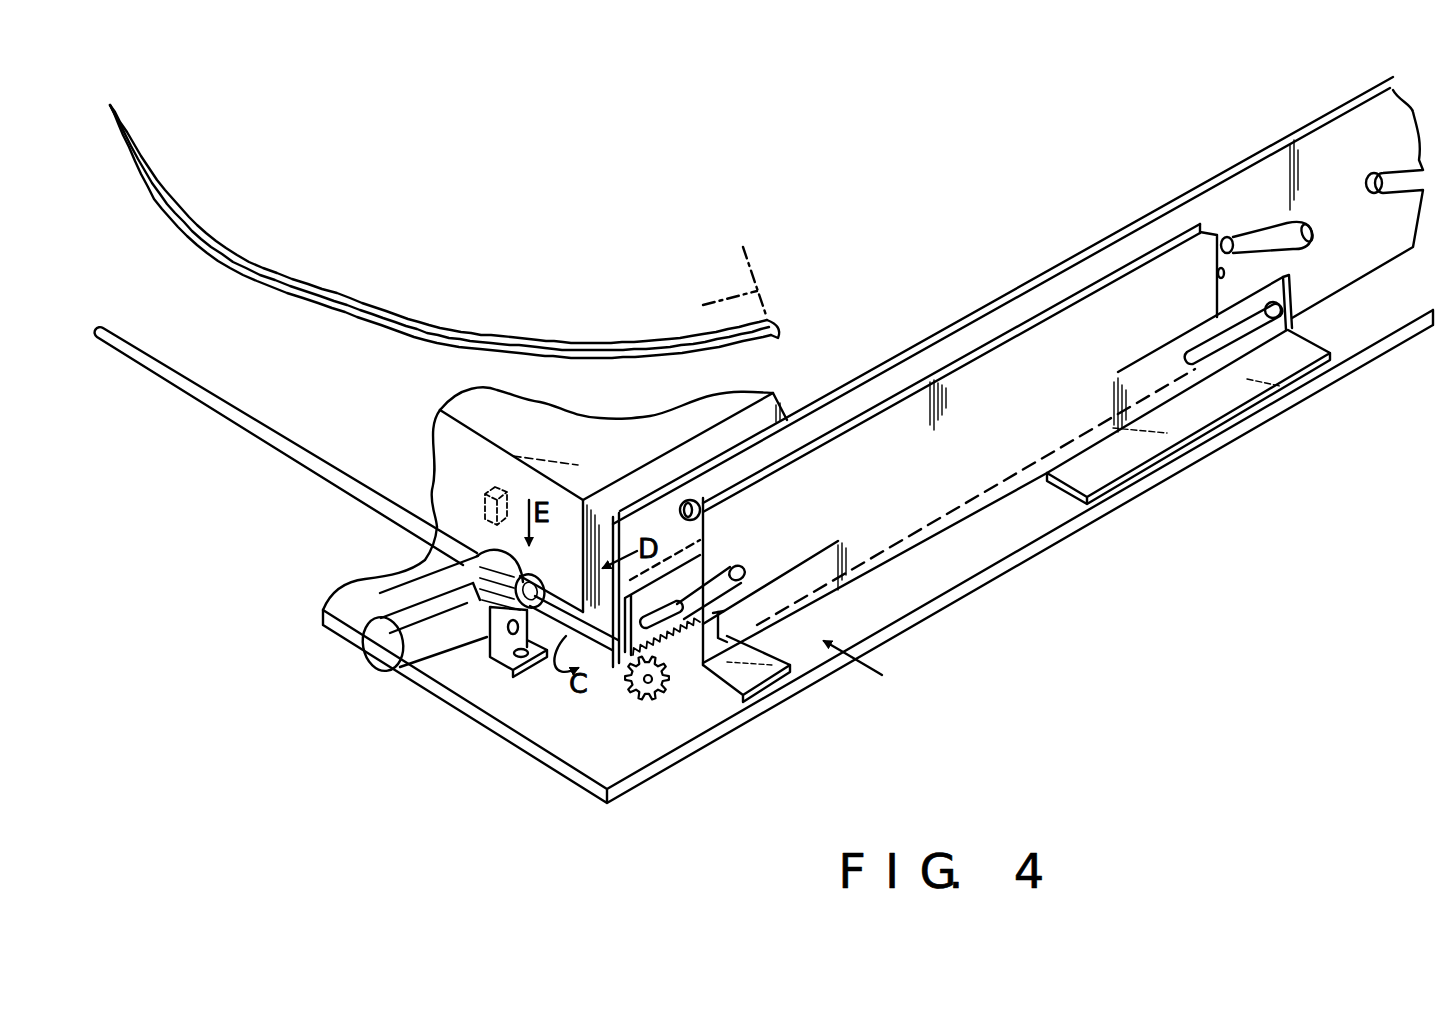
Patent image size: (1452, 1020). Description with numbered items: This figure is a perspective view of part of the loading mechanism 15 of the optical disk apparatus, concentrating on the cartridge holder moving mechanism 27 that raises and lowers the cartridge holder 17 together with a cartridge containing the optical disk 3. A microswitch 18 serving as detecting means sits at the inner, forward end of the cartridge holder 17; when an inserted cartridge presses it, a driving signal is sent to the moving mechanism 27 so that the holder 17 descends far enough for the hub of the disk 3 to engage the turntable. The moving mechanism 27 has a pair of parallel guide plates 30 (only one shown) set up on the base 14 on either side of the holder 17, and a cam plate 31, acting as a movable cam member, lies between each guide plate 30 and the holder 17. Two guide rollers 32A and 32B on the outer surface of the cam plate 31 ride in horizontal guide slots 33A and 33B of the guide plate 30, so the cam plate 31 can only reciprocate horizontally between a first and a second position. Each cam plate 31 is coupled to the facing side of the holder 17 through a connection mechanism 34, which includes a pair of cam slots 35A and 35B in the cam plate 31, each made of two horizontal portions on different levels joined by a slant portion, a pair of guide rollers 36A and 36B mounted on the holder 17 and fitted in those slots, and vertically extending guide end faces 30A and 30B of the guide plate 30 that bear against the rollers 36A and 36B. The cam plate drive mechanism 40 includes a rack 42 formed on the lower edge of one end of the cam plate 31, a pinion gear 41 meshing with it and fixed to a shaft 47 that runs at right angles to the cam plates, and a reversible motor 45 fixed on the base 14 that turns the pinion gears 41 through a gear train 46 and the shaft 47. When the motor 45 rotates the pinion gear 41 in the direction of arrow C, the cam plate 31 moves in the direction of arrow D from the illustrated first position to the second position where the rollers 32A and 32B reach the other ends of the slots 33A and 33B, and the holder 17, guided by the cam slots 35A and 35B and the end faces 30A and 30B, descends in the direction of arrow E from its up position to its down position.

The optical disk 3 is at (752, 293).
The base 14 is at (1033, 546).
The loading mechanism 15 is at (400, 447).
The cartridge holder 17 is at (443, 510).
The microswitch 18 is at (498, 482).
The cartridge holder moving mechanism 27 is at (905, 677).
The guide plate 30 is at (915, 523).
The guide end face 30A is at (705, 543).
The guide end face 30B is at (1213, 278).
The cam plate 31 is at (1025, 300).
The guide roller 32A is at (743, 585).
The guide roller 32B is at (1277, 318).
The guide slot 33A is at (684, 622).
The guide slot 33B is at (1224, 348).
The connection mechanism 34 is at (1300, 257).
The cam slot 35A is at (707, 510).
The cam slot 35B is at (1312, 240).
The guide roller 36A is at (686, 500).
The guide roller 36B is at (1228, 237).
The cam plate drive mechanism 40 is at (457, 617).
The pinion gear 41 is at (640, 697).
The rack 42 is at (668, 648).
The reversible motor 45 is at (407, 666).
The gear train 46 is at (508, 665).
The shaft 47 is at (312, 450).